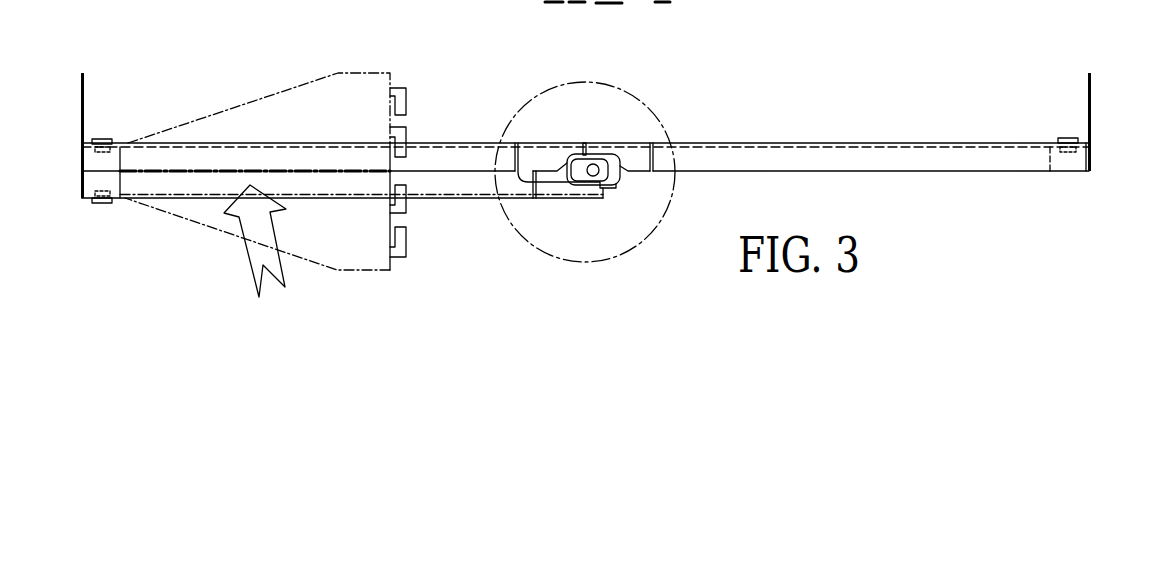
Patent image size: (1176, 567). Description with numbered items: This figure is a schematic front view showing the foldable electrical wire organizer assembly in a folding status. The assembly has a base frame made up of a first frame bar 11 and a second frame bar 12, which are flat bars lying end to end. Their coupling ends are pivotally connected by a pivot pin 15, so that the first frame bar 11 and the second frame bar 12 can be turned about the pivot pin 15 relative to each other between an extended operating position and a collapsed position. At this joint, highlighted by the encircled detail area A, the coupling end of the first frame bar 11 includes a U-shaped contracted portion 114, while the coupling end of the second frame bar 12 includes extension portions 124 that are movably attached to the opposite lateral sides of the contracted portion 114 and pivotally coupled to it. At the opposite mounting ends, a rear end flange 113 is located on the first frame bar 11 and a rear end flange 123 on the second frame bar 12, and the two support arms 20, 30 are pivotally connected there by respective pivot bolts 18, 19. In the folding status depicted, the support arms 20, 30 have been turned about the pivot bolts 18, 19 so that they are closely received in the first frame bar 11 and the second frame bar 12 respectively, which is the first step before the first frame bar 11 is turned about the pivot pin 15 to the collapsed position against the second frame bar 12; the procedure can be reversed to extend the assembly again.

The first frame bar 11 is at (446, 142).
The second frame bar 12 is at (829, 143).
The pivot pin 15 is at (596, 166).
The pivot bolt 18 is at (103, 140).
The pivot bolt 19 is at (1069, 140).
The support arm 20 is at (85, 98).
The support arm 30 is at (1087, 98).
The rear end flange 113 is at (80, 161).
The rear end flange 123 is at (1090, 160).
The U-shaped contracted portion 114 is at (537, 157).
The extension portions 124 is at (642, 153).
The detail area A is at (542, 93).